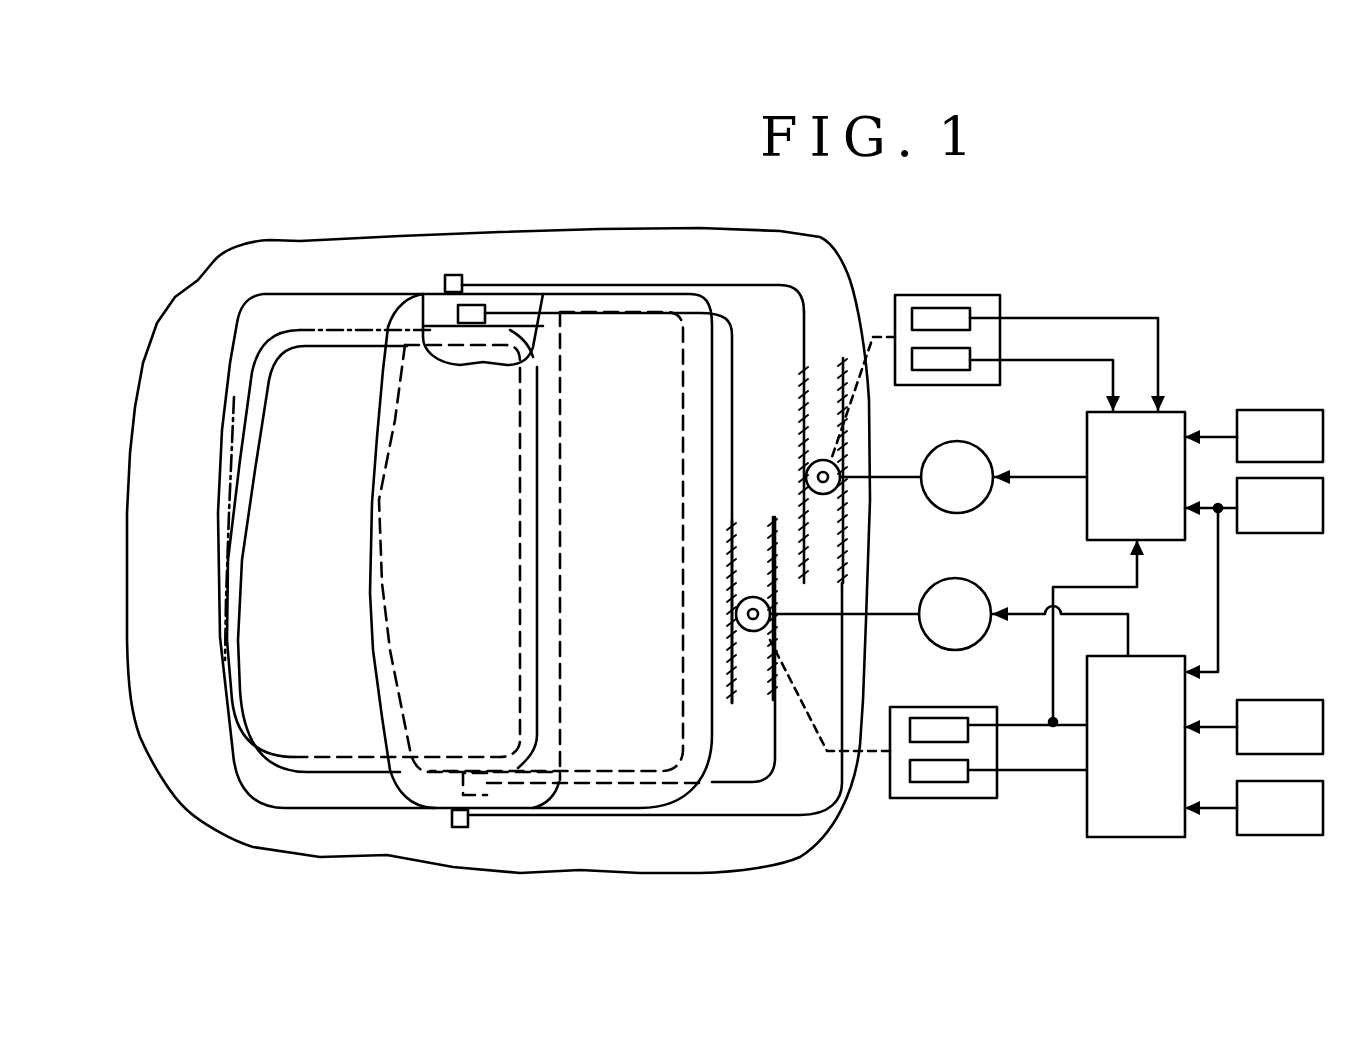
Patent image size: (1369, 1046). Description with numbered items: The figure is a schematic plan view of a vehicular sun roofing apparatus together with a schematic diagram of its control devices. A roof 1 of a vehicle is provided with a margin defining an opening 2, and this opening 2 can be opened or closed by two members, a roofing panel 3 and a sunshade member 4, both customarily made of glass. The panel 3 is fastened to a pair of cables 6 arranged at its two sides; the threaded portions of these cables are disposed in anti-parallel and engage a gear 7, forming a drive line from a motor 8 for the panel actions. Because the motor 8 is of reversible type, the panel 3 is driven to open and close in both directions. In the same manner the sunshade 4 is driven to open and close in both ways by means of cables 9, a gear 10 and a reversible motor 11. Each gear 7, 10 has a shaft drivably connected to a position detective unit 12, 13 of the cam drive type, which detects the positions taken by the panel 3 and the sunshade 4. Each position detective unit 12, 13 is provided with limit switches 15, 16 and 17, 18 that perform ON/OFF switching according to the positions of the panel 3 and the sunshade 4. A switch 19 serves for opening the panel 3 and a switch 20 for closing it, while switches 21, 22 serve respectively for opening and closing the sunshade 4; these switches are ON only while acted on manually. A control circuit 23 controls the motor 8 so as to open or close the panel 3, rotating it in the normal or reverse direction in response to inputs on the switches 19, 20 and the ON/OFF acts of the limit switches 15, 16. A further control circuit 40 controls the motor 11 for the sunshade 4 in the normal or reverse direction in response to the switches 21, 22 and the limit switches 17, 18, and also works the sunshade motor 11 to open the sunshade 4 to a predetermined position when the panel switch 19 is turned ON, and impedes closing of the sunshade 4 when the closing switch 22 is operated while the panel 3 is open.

The roof 1 is at (354, 257).
The opening 2 is at (221, 612).
The roofing panel 3 is at (390, 578).
The sunshade member 4 is at (377, 500).
The cables 6 is at (843, 355).
The gear 7 is at (812, 466).
The motor 8 is at (982, 461).
The cables 9 is at (773, 515).
The gear 10 is at (744, 627).
The motor 11 is at (967, 583).
The position detective unit 12 is at (998, 342).
The position detective unit 13 is at (928, 748).
The limit switch 15 is at (941, 308).
The limit switch 16 is at (937, 370).
The limit switch 17 is at (938, 718).
The limit switch 18 is at (942, 783).
The switch 19 is at (1300, 525).
The switch 20 is at (1260, 452).
The switch 21 is at (1260, 744).
The switch 22 is at (1260, 825).
The control circuit 23 is at (1114, 494).
The control circuit 40 is at (1114, 764).